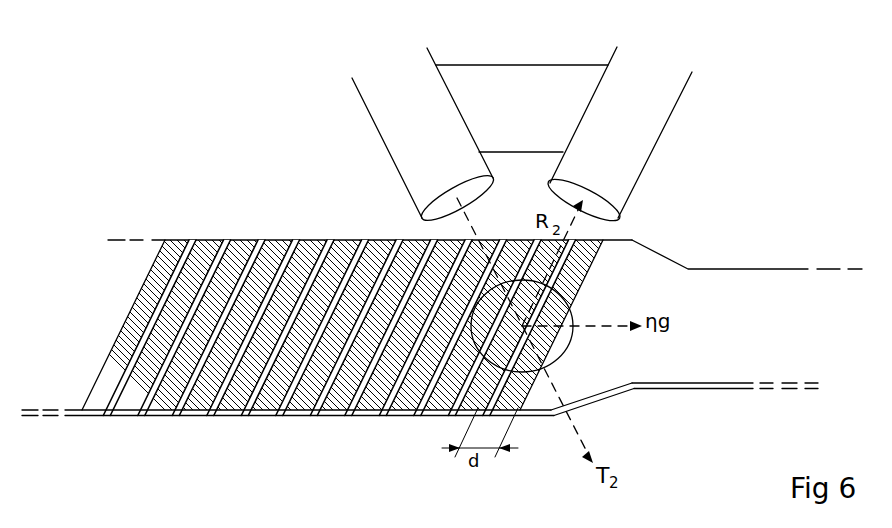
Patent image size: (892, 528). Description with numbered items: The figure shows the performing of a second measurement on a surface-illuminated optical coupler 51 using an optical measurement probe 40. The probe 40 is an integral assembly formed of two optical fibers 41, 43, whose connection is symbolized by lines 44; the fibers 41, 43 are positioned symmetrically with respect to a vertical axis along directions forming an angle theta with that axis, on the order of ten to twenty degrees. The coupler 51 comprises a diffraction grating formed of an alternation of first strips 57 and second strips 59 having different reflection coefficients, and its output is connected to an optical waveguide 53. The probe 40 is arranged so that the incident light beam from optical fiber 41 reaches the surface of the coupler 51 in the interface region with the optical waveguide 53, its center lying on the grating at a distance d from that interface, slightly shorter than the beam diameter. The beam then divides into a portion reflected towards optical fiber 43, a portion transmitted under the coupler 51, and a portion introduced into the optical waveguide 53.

The optical measurement probe 40 is at (320, 64).
The optical fiber 41 is at (403, 127).
The optical fiber 43 is at (640, 126).
The lines 44 is at (523, 64).
The surface-illuminated optical coupler 51 is at (387, 321).
The optical waveguide 53 is at (748, 292).
The first strips 57 is at (298, 417).
The second strips 59 is at (328, 417).